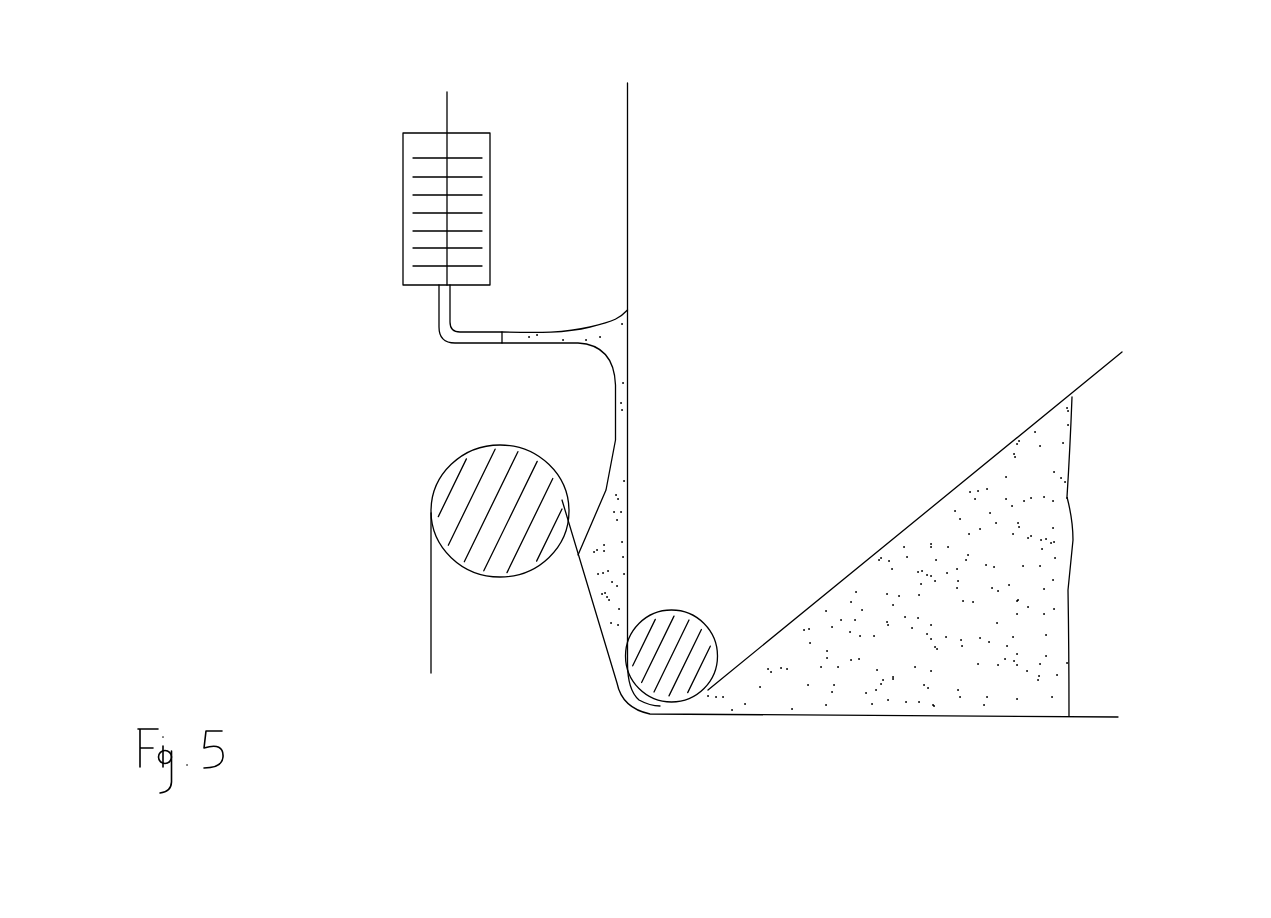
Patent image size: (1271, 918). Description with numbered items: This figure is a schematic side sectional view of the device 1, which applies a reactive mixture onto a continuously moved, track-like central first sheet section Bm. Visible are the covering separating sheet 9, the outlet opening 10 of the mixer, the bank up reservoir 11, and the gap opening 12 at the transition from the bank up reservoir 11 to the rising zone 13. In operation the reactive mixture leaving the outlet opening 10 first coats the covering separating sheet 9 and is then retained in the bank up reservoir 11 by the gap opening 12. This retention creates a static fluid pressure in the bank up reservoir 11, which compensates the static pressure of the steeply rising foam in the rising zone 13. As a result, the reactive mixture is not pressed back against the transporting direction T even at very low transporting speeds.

The device 1 is at (285, 78).
The covering separating sheet 9 is at (628, 228).
The outlet opening of the mixer 10 is at (492, 333).
The bank up reservoir 11 is at (581, 508).
The gap opening 12 is at (659, 706).
The rising zone 13 is at (930, 627).
The central first sheet section Bm is at (430, 597).
The transporting direction T is at (1207, 721).